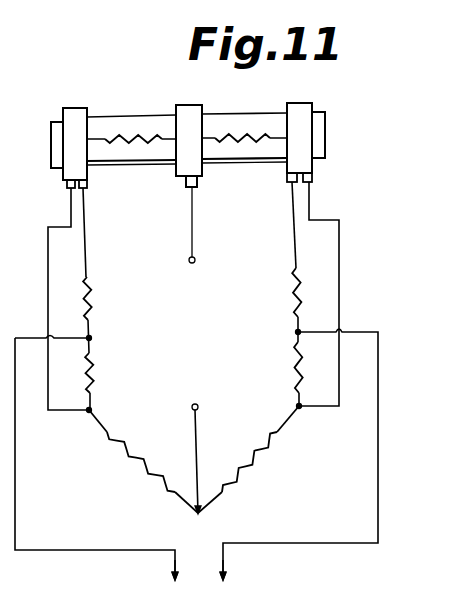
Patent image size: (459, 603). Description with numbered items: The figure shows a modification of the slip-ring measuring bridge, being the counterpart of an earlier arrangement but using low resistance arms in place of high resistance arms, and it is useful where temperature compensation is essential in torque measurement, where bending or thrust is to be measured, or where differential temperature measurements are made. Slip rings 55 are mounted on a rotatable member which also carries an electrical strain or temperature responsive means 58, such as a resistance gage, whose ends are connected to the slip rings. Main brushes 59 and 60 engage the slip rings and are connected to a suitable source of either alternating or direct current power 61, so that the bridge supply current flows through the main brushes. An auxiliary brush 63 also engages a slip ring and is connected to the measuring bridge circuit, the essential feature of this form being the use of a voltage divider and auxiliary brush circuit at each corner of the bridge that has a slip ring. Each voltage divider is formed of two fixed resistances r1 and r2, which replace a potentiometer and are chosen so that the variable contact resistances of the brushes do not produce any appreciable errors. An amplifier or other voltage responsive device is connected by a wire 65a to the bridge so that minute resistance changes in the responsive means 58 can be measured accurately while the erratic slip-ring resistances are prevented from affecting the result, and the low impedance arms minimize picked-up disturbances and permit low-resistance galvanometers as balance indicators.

The slip ring 55 is at (70, 109).
The electrical strain or temperature responsive means 58 is at (137, 138).
The main brush 59 is at (67, 185).
The main brush 60 is at (88, 186).
The source of power 61 is at (199, 568).
The auxiliary brush 63 is at (192, 237).
The wire 65a is at (198, 431).
The fixed resistance r1 is at (292, 367).
The fixed resistance r2 is at (192, 294).